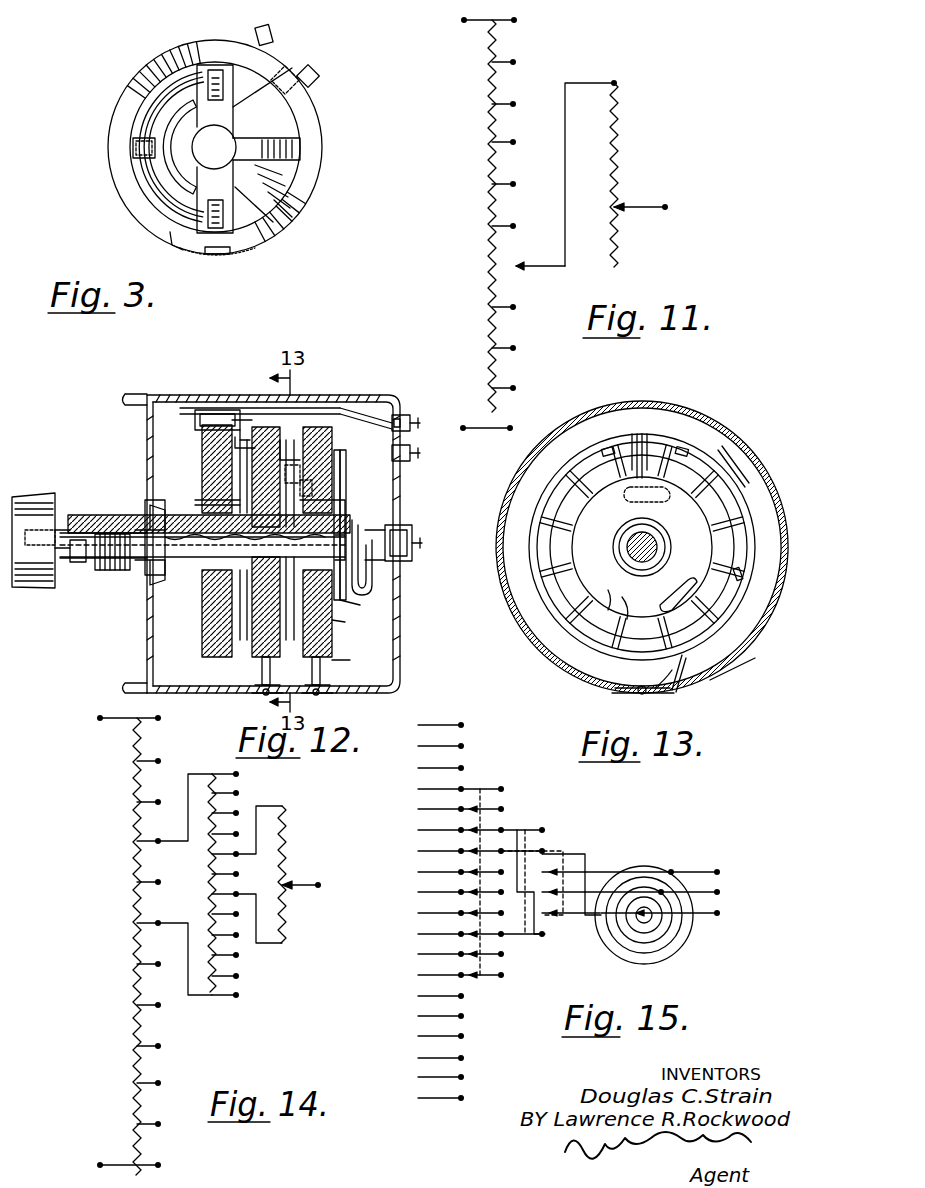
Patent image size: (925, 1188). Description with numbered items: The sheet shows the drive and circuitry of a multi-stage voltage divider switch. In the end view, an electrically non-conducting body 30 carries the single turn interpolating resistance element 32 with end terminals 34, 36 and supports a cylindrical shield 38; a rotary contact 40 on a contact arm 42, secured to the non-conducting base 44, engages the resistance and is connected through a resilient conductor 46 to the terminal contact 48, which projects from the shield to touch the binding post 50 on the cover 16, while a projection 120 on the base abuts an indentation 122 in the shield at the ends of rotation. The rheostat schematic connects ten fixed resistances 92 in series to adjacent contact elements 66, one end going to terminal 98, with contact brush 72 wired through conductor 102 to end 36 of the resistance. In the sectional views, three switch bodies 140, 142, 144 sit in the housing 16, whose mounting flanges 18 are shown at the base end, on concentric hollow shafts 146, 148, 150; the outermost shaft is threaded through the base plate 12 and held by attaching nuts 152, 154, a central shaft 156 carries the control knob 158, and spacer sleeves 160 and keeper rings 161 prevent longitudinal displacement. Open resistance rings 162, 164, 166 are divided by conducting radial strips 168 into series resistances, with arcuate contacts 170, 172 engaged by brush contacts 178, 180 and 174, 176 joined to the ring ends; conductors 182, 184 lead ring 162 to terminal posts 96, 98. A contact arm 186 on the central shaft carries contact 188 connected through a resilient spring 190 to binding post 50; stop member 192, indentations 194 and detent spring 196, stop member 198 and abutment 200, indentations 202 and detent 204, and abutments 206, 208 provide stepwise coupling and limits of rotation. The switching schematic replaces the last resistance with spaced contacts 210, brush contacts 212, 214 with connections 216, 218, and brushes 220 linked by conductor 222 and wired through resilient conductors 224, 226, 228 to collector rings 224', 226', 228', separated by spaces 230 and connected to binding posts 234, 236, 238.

In FIG. 12, the base plate 12 is at (145, 632).
In FIG. 12, the housing 16 is at (400, 688).
In FIG. 13, the housing 16 is at (525, 618).
In FIG. 12, the mounting flange 18 is at (127, 394).
In FIG. 14, the mounting flange 18 is at (98, 723).
In FIG. 3, the electrically non-conducting body 30 is at (185, 248).
In FIG. 3, the interpolating resistance element 32 is at (143, 95).
In FIG. 11, the interpolating resistance element 32 is at (617, 134).
In FIG. 3, the end terminal 34 is at (315, 74).
In FIG. 3, the end terminal 36 is at (268, 36).
In FIG. 11, the end terminal 36 is at (616, 82).
In FIG. 3, the cylindrical shield 38 is at (147, 55).
In FIG. 3, the rotary contact 40 is at (133, 148).
In FIG. 11, the rotary contact 40 is at (628, 204).
In FIG. 3, the contact arm 42 is at (130, 180).
In FIG. 3, the electrically non-conducting base 44 is at (293, 175).
In FIG. 3, the resilient conductor 46 is at (296, 140).
In FIG. 3, the terminal contact 48 is at (222, 132).
In FIG. 11, the binding post 50 is at (664, 210).
In FIG. 12, the binding post 50 is at (415, 543).
In FIG. 14, the binding post 50 is at (320, 885).
In FIG. 11, the contact elements 66 is at (520, 38).
In FIG. 11, the contact brush 72 is at (522, 270).
In FIG. 11, the fixed resistances 92 is at (472, 210).
In FIG. 12, the terminal post 96 is at (420, 422).
In FIG. 14, the terminal post 96 is at (98, 1164).
In FIG. 11, the terminal post 98 is at (462, 22).
In FIG. 12, the terminal post 98 is at (420, 453).
In FIG. 11, the conductor 102 is at (565, 130).
In FIG. 3, the projection 120 is at (293, 68).
In FIG. 3, the indentation 122 is at (214, 256).
In FIG. 12, the switch body 140 is at (193, 414).
In FIG. 12, the switch body 142 is at (265, 425).
In FIG. 13, the switch body 142 is at (642, 437).
In FIG. 12, the switch body 144 is at (335, 418).
In FIG. 12, the outermost hollow shaft 146 is at (103, 514).
In FIG. 12, the hollow shaft 148 is at (82, 510).
In FIG. 12, the innermost hollow shaft 150 is at (69, 529).
In FIG. 13, the innermost hollow shaft 150 is at (646, 540).
In FIG. 12, the attaching nut 152 is at (135, 585).
In FIG. 12, the attaching nut 154 is at (169, 582).
In FIG. 12, the central shaft 156 is at (55, 498).
In FIG. 13, the central shaft 156 is at (654, 542).
In FIG. 12, the control knob 158 is at (32, 590).
In FIG. 12, the spacer sleeves 160 is at (158, 558).
In FIG. 13, the spacer sleeves 160 is at (660, 552).
In FIG. 12, the keeper rings 161 is at (80, 560).
In FIG. 12, the resistance ring 162 is at (204, 462).
In FIG. 14, the resistance ring 162 is at (127, 897).
In FIG. 12, the resistance ring 164 is at (290, 440).
In FIG. 13, the resistance ring 164 is at (578, 578).
In FIG. 14, the resistance ring 164 is at (209, 875).
In FIG. 12, the resistance ring 166 is at (360, 630).
In FIG. 14, the resistance ring 166 is at (286, 850).
In FIG. 13, the radial strips 168 is at (565, 560).
In FIG. 12, the contacts 170 is at (227, 421).
In FIG. 14, the contacts 170 is at (163, 825).
In FIG. 15, the contacts 170 is at (463, 725).
In FIG. 12, the contacts 172 is at (290, 440).
In FIG. 13, the contacts 172 is at (735, 487).
In FIG. 14, the contacts 172 is at (248, 994).
In FIG. 15, the contacts 172 is at (513, 974).
In FIG. 12, the brush contact 174 is at (295, 658).
In FIG. 13, the brush contact 174 is at (745, 600).
In FIG. 14, the brush contact 174 is at (248, 810).
In FIG. 12, the brush contact 176 is at (343, 595).
In FIG. 13, the brush contact 176 is at (700, 655).
In FIG. 14, the brush contact 176 is at (246, 925).
In FIG. 12, the brush contact 178 is at (242, 414).
In FIG. 13, the brush contact 178 is at (602, 449).
In FIG. 14, the brush contact 178 is at (175, 825).
In FIG. 12, the brush contact 180 is at (206, 494).
In FIG. 13, the brush contact 180 is at (686, 450).
In FIG. 14, the brush contact 180 is at (153, 927).
In FIG. 12, the conductor 182 is at (405, 412).
In FIG. 12, the conductor 184 is at (370, 408).
In FIG. 12, the contact arm 186 is at (342, 482).
In FIG. 12, the electric contact 188 is at (345, 466).
In FIG. 14, the electric contact 188 is at (288, 898).
In FIG. 12, the conducting resilient spring 190 is at (378, 589).
In FIG. 12, the stop member 192 is at (345, 617).
In FIG. 12, the indentations 194 is at (335, 665).
In FIG. 12, the resilient detent spring 196 is at (320, 688).
In FIG. 12, the stop member 198 is at (318, 493).
In FIG. 13, the stop member 198 is at (647, 505).
In FIG. 13, the abutment 200 is at (663, 591).
In FIG. 13, the indentations 202 is at (560, 653).
In FIG. 12, the resilient spring detent 204 is at (257, 685).
In FIG. 13, the resilient spring detent 204 is at (678, 683).
In FIG. 12, the abutment 206 is at (205, 605).
In FIG. 12, the abutment 208 is at (205, 476).
In FIG. 15, the switch contacts 210 is at (548, 853).
In FIG. 15, the brush contacts 212 is at (480, 789).
In FIG. 15, the brush contacts 214 is at (516, 830).
In FIG. 15, the electrical connection 216 is at (542, 837).
In FIG. 15, the electrical connection 218 is at (542, 943).
In FIG. 15, the brush contacts 220 is at (555, 868).
In FIG. 15, the electrical conductor 222 is at (567, 915).
In FIG. 15, the resilient conductor 224 is at (626, 937).
In FIG. 15, the collector ring 224' is at (632, 953).
In FIG. 15, the resilient conductor 226 is at (664, 893).
In FIG. 15, the collector ring 226' is at (700, 952).
In FIG. 15, the resilient conductor 228 is at (644, 891).
In FIG. 15, the collector ring 228' is at (719, 935).
In FIG. 15, the spaces 230 is at (660, 955).
In FIG. 15, the binding post 234 is at (718, 916).
In FIG. 15, the binding post 236 is at (718, 894).
In FIG. 15, the binding post 238 is at (718, 873).